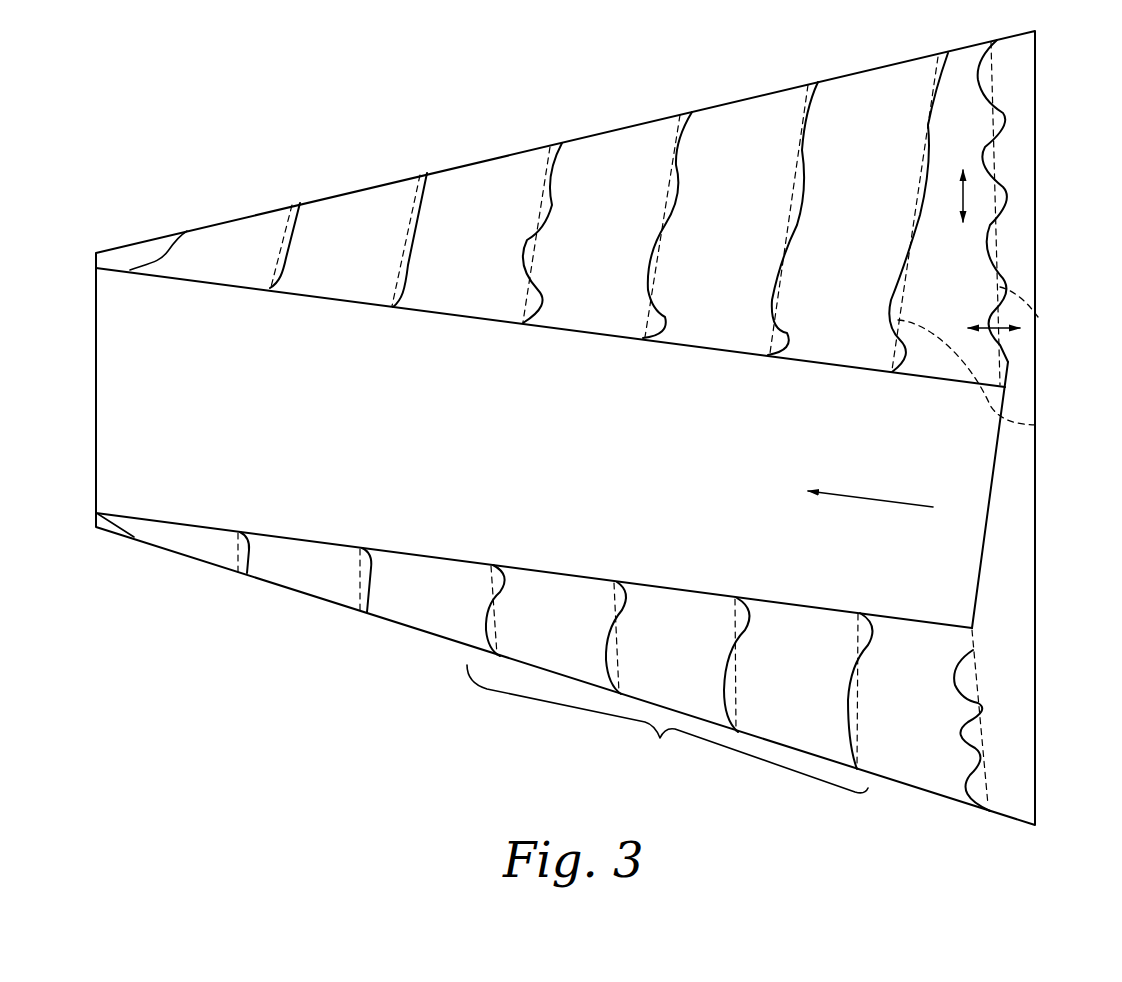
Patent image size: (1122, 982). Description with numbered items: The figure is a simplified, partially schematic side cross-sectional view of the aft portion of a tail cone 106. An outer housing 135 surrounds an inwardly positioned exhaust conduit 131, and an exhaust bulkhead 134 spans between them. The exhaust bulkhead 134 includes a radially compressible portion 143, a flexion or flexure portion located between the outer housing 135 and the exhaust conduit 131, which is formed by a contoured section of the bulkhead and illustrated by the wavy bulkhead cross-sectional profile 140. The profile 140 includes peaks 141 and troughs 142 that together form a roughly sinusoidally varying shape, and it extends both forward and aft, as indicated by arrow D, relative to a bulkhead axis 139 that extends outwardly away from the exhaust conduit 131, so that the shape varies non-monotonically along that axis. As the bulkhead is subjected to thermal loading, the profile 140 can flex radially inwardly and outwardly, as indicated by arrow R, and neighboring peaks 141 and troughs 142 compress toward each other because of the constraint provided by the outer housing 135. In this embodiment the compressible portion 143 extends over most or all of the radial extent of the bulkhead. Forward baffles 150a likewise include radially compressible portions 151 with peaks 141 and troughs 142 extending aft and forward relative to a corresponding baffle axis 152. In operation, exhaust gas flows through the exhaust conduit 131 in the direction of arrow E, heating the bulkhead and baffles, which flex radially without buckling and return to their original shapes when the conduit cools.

The tail cone 106 is at (487, 136).
The exhaust conduit 131 is at (543, 572).
The outer housing 135 is at (617, 127).
The exhaust bulkhead 134 is at (1007, 187).
The bulkhead axis 139 is at (1038, 317).
The bulkhead cross-sectional profile 140 is at (1005, 113).
The peaks 141 is at (890, 303).
The troughs 142 is at (1010, 288).
The radially compressible portion 143 is at (1007, 245).
The forward baffles 150a is at (658, 742).
The radially compressible portions 151 is at (885, 329).
The baffle axis 152 is at (1040, 425).
The radial direction R is at (960, 200).
The forward and aft direction D is at (1000, 333).
The exhaust gas flow direction E is at (882, 500).